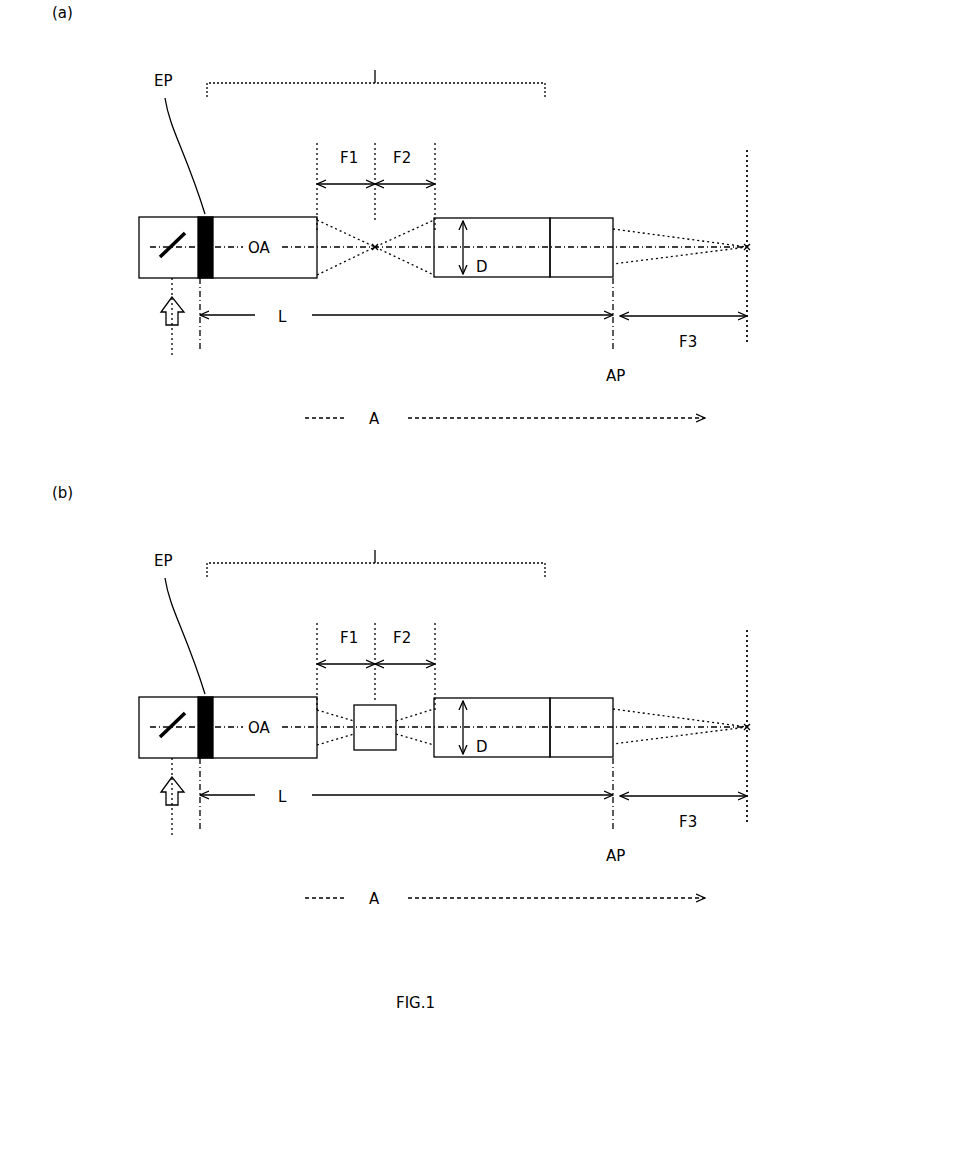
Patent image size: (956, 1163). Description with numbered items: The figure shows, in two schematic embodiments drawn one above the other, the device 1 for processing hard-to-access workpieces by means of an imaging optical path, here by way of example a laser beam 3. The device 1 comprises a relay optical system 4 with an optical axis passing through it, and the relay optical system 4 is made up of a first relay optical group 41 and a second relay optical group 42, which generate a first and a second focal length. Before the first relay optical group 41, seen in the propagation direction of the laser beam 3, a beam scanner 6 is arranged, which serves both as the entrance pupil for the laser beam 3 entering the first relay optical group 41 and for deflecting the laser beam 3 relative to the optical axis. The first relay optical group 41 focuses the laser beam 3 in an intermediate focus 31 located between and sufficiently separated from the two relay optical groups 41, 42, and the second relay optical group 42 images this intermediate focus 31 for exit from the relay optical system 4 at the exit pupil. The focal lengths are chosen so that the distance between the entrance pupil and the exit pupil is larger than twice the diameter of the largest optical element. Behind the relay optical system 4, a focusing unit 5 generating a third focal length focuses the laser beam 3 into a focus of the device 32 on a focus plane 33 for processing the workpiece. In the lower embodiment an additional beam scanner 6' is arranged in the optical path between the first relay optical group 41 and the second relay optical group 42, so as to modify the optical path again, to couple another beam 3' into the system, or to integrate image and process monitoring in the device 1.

The device 1 is at (155, 167).
The laser beam 3 is at (445, 481).
The another beam 3' is at (377, 818).
The relay optical system 4 is at (376, 309).
The focusing unit 5 is at (582, 215).
The beam scanner 6 is at (124, 501).
The additional beam scanner 6' is at (356, 777).
The intermediate focus 31 is at (374, 262).
The focus of the device 32 is at (757, 246).
The focus plane 33 is at (746, 473).
The first relay optical group 41 is at (258, 215).
The second relay optical group 42 is at (487, 215).